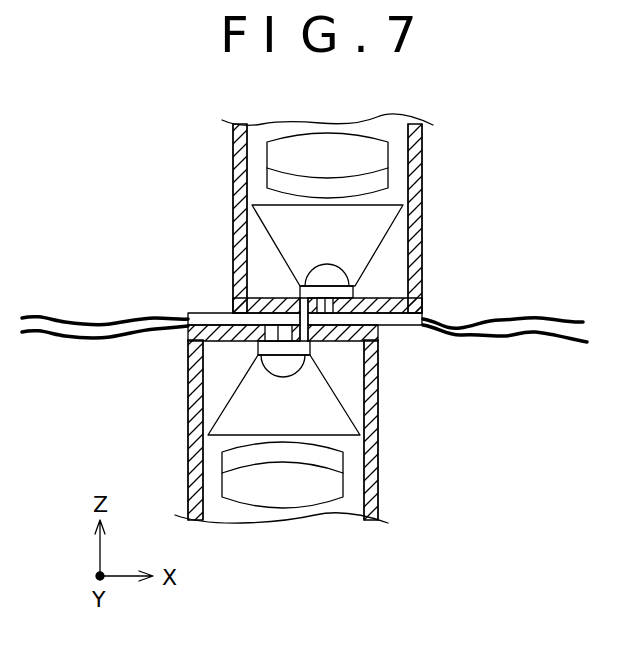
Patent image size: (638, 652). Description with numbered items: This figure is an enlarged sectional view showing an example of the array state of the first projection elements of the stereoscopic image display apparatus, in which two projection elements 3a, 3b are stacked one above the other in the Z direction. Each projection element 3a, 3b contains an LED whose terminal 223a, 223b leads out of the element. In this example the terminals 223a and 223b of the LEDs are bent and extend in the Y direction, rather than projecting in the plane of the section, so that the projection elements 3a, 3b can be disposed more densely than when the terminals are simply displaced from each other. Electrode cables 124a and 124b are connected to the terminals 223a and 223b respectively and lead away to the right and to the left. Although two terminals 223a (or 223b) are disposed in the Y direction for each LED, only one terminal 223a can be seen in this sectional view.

The projection element 3a is at (425, 182).
The projection element 3b is at (382, 432).
The terminal 223a is at (403, 325).
The terminal 223b is at (202, 320).
The electrode cable 124a is at (563, 345).
The electrode cable 124b is at (60, 314).